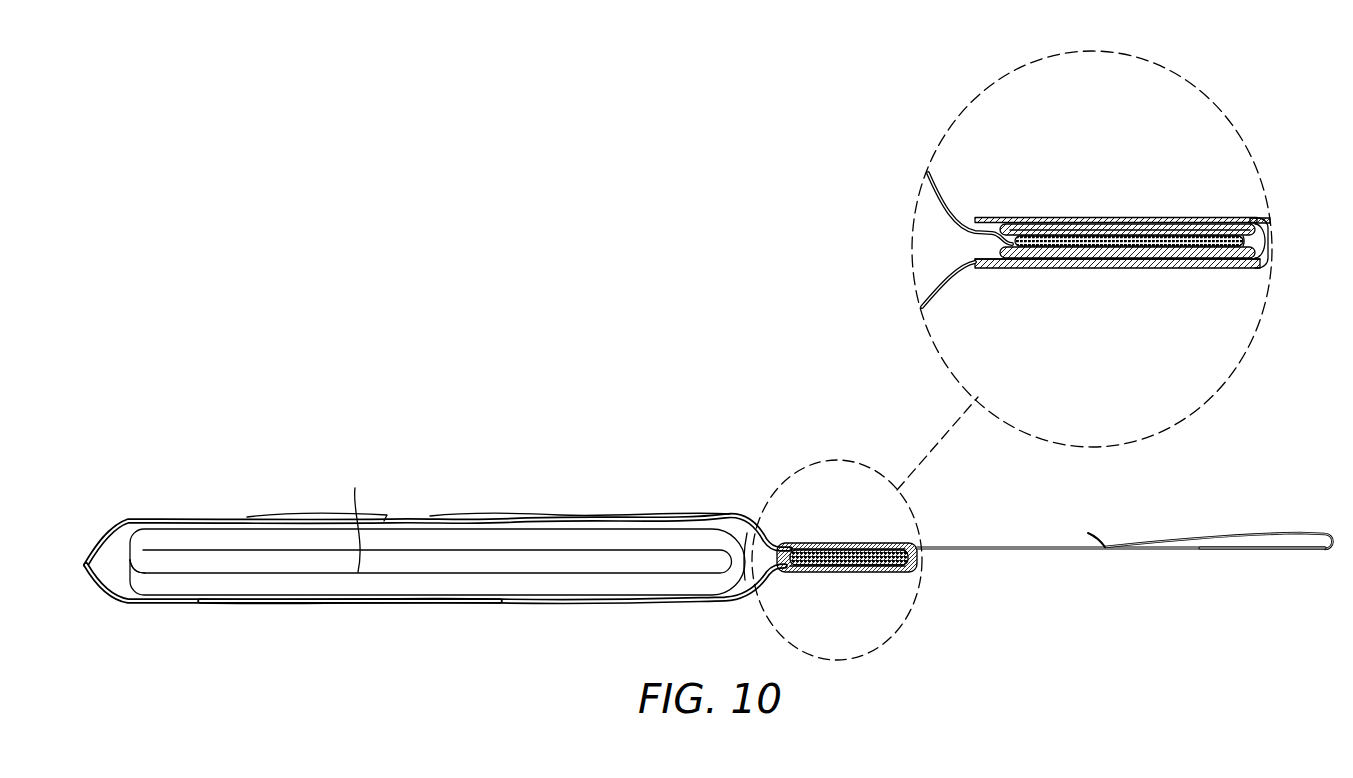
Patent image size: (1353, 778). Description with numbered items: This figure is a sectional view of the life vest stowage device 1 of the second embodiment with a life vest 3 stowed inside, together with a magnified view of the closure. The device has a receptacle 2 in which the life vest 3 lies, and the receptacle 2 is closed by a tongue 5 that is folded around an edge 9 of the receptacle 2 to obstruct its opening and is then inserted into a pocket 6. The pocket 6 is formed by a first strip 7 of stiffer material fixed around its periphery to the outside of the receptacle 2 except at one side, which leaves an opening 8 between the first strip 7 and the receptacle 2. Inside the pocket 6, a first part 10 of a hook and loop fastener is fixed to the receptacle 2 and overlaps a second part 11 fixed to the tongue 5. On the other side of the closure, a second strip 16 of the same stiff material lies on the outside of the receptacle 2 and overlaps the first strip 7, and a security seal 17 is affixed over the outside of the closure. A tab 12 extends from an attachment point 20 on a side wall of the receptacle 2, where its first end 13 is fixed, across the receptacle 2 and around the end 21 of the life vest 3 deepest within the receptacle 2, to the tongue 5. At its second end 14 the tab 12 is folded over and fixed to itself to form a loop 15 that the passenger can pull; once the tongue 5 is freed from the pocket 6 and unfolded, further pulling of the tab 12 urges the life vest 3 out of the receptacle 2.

The life vest stowage device 1 is at (438, 546).
The receptacle 2 is at (506, 519).
The life vest 3 is at (622, 540).
The tongue 5 is at (1108, 229).
The pocket 6 is at (847, 557).
The first strip 7 is at (998, 217).
The opening 8 is at (1228, 246).
The edge 9 is at (1262, 256).
The first part 10 is at (1183, 266).
The second part 11 is at (1152, 240).
The tab 12 is at (983, 552).
The first end 13 is at (360, 577).
The second end 14 is at (1291, 520).
The loop 15 is at (1240, 552).
The second strip 16 is at (998, 270).
The security seal 17 is at (1192, 225).
The attachment point 20 is at (355, 516).
The end 21 is at (147, 563).